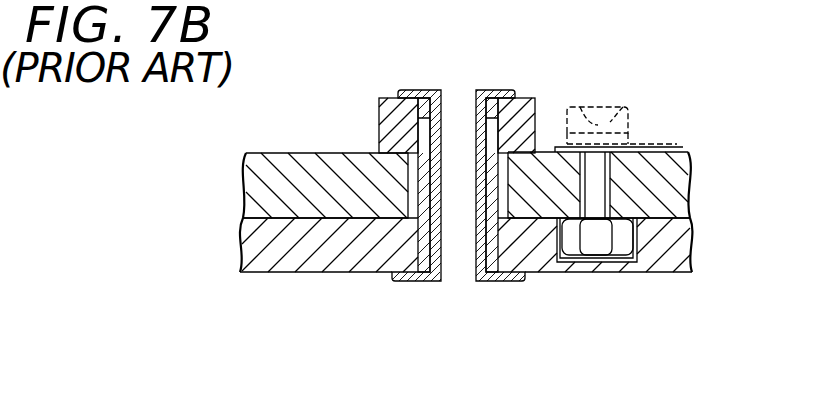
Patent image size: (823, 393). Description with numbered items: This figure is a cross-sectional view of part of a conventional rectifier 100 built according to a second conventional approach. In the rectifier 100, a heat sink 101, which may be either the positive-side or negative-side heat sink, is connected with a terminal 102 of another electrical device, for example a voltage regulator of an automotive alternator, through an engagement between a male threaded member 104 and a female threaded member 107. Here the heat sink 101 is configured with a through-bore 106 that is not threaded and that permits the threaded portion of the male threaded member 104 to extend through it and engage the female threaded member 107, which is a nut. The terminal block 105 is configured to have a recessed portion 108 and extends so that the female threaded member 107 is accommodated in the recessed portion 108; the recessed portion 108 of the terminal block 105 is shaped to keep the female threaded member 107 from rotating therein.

The conventional rectifier 100 is at (344, 67).
The heat sink 101 is at (688, 162).
The terminal 102 is at (662, 147).
The male threaded member 104 is at (627, 107).
The terminal block 105 is at (673, 255).
The through-bore 106 is at (612, 178).
The female threaded member 107 is at (593, 243).
The recessed portion 108 is at (618, 258).